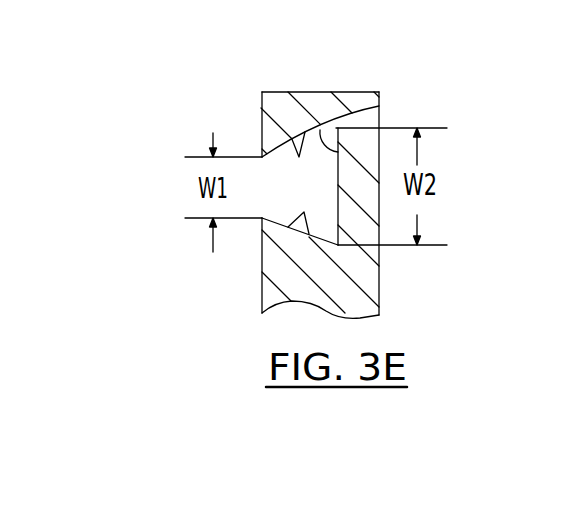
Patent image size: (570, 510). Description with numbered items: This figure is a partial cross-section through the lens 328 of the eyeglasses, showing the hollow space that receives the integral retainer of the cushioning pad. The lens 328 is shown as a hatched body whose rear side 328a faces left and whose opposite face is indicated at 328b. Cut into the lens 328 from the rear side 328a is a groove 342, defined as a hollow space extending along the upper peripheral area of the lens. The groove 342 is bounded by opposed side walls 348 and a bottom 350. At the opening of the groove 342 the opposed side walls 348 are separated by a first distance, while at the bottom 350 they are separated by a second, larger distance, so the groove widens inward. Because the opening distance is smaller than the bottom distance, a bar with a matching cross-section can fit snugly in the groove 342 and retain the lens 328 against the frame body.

The lens 328 is at (340, 92).
The rear side 328a is at (260, 306).
The second portion of body 328b is at (380, 306).
The groove 342 is at (285, 193).
The opposed side walls 348 is at (299, 156).
The bottom 350 is at (379, 104).